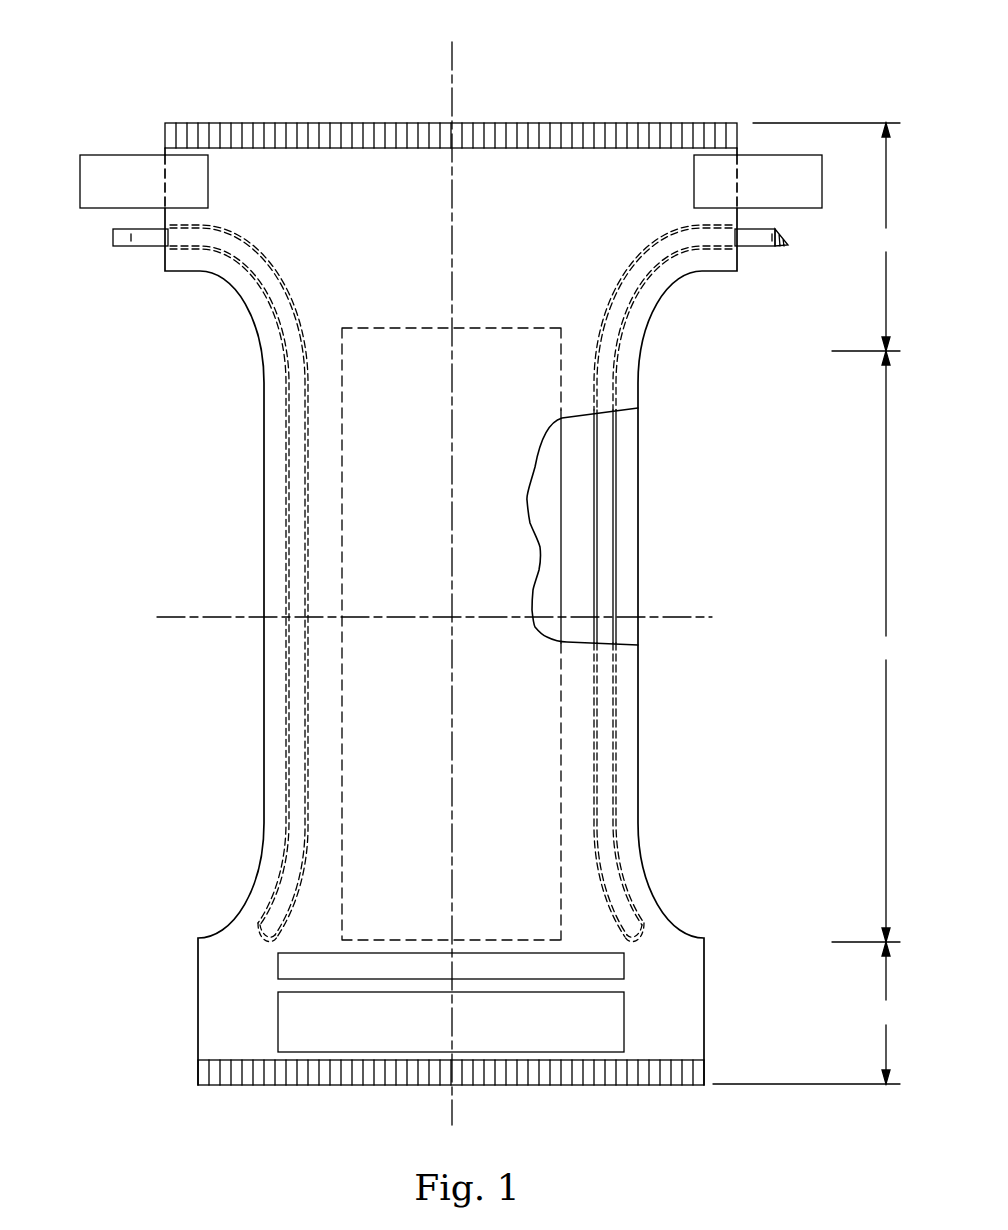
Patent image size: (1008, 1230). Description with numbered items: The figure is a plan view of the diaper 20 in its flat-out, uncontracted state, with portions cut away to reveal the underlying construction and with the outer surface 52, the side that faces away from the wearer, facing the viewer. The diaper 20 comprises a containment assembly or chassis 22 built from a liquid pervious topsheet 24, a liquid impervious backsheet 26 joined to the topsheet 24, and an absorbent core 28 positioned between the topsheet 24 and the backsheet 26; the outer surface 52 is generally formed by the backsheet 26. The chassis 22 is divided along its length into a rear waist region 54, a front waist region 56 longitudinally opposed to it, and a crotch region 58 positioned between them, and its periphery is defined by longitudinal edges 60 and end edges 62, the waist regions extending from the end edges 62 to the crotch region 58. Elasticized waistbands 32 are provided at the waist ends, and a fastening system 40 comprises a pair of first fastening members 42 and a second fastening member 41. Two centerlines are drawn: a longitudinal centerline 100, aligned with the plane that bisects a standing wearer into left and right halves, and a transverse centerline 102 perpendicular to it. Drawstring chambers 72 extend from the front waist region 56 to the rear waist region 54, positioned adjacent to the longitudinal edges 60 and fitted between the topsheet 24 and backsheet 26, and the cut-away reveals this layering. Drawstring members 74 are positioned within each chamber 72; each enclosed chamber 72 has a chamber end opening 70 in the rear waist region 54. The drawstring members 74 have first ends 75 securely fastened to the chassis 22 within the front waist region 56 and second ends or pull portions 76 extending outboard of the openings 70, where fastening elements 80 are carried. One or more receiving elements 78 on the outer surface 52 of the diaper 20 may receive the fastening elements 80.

The diaper 20 is at (609, 65).
The chassis 22 is at (636, 179).
The topsheet 24 is at (580, 437).
The backsheet 26 is at (419, 233).
The absorbent core 28 is at (540, 545).
The elasticized waistbands 32 is at (488, 132).
The fastening system 40 is at (80, 197).
The second fastening member 41 is at (507, 1037).
The first fastening members 42 is at (115, 155).
The outer surface 52 is at (345, 173).
The rear waist region 54 is at (828, 237).
The front waist region 56 is at (808, 1013).
The crotch region 58 is at (868, 646).
The longitudinal edges 60 is at (265, 778).
The end edges 62 is at (608, 122).
The chamber end opening 70 is at (165, 247).
The drawstring chambers 72 is at (286, 460).
The drawstring members 74 is at (288, 540).
The first ends 75 is at (258, 920).
The second ends 76 is at (140, 247).
The receiving elements 78 is at (624, 965).
The fastening elements 80 is at (787, 240).
The longitudinal centerline 100 is at (455, 66).
The transverse centerline 102 is at (700, 616).